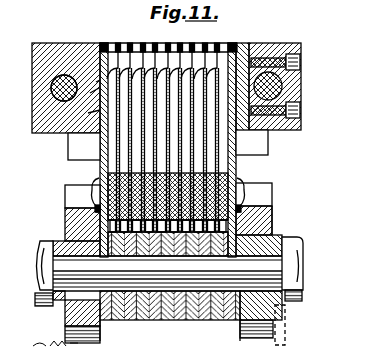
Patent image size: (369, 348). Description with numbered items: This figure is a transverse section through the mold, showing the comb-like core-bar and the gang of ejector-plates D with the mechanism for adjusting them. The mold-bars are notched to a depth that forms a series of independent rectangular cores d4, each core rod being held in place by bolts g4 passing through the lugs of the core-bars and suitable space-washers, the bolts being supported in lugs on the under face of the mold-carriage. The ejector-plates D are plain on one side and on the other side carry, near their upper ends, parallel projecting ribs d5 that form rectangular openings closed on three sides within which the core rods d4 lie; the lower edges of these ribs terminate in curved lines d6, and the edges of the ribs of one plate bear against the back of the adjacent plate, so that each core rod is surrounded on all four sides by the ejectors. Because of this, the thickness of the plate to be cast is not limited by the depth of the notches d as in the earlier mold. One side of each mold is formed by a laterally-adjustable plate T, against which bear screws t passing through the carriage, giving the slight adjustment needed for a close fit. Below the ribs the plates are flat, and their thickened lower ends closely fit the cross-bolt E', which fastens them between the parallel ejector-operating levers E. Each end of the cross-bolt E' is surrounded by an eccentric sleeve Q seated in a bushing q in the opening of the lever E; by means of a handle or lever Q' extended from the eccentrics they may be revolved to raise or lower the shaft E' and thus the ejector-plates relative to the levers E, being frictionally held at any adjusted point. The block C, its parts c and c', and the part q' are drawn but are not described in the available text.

The supporting block C is at (82, 48).
The passage in block c is at (94, 82).
The notches d is at (90, 93).
The block portion c' is at (89, 116).
The laterally-adjustable plate T is at (247, 46).
The screws t is at (300, 58).
The ejector-plates D is at (100, 147).
The bolts g4 is at (260, 178).
The cores d4 is at (116, 44).
The curved lines d6 is at (194, 66).
The ribs d5 is at (218, 62).
The eccentric sleeve Q is at (169, 263).
The flange q' is at (281, 220).
The cross-bolt E' is at (167, 273).
The bushing q is at (73, 321).
The ejector-operating levers E is at (247, 315).
The handle or lever Q' is at (297, 325).